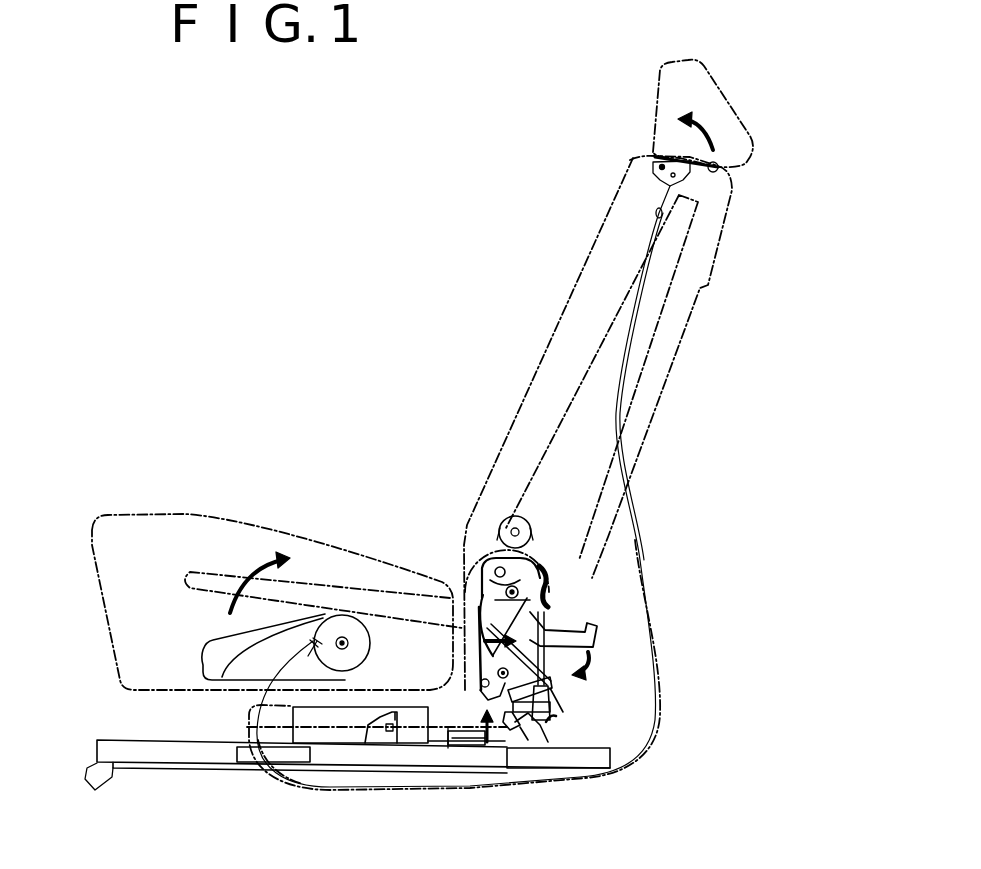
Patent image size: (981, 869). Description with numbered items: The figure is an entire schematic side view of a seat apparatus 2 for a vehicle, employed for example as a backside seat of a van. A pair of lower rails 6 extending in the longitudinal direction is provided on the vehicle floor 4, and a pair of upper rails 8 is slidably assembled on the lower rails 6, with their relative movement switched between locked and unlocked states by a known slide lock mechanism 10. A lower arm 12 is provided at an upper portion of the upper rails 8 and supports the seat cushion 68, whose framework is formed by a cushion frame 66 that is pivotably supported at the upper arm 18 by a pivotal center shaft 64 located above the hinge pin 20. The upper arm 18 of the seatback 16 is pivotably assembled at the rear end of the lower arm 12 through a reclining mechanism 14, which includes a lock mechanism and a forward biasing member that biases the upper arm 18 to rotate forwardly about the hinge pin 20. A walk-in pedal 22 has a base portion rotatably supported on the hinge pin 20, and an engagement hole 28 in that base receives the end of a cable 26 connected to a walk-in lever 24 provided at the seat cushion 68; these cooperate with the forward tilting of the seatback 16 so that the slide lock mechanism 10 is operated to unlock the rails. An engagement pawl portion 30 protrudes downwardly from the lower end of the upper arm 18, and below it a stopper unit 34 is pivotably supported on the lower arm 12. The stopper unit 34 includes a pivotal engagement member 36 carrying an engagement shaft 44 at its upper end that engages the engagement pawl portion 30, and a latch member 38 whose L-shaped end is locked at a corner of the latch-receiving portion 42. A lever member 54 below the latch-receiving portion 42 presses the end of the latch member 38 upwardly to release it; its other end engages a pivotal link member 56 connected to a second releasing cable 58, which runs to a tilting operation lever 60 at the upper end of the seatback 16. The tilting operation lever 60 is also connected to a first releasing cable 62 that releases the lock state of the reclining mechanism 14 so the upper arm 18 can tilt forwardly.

The seat apparatus 2 is at (711, 766).
The vehicle floor 4 is at (100, 782).
The lower rails 6 is at (150, 758).
The upper rails 8 is at (257, 753).
The slide lock mechanism 10 is at (315, 735).
The lower arm 12 is at (433, 735).
The reclining mechanism 14 is at (603, 593).
The seatback 16 is at (567, 306).
The upper arm 18 is at (565, 412).
The hinge pin 20 is at (517, 565).
The walk-in pedal 22 is at (596, 637).
The walk-in lever 24 is at (240, 633).
The cable 26 is at (367, 793).
The engagement hole 28 is at (540, 573).
The engagement pawl portion 30 is at (478, 598).
The stopper unit 34 is at (487, 745).
The pivotal engagement member 36 is at (478, 660).
The latch member 38 is at (537, 690).
The latch-receiving portion 42 is at (533, 735).
The engagement shaft 44 is at (473, 637).
The lever member 54 is at (553, 700).
The pivotal link member 56 is at (530, 723).
The second releasing cable 58 is at (455, 745).
The tilting operation lever 60 is at (716, 162).
The first releasing cable 62 is at (633, 508).
The pivotal center shaft 64 is at (513, 518).
The cushion frame 66 is at (323, 590).
The seat cushion 68 is at (224, 518).